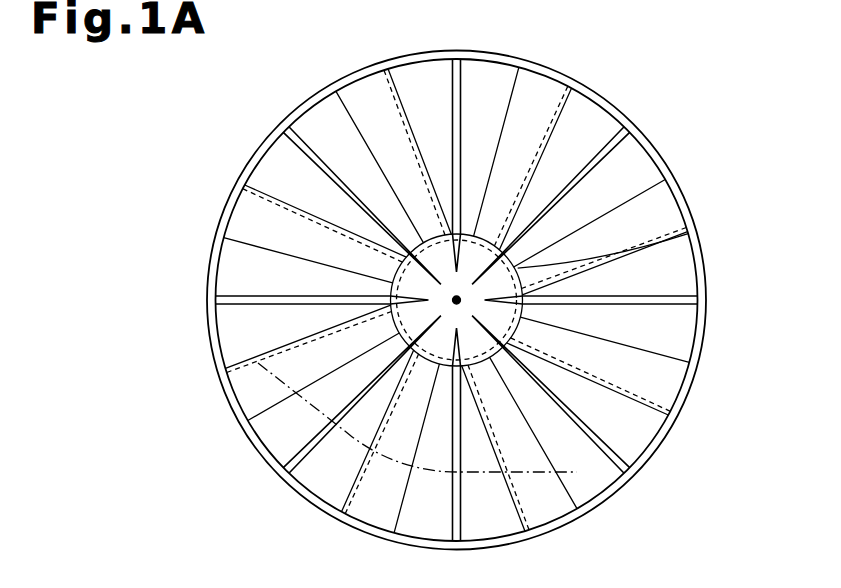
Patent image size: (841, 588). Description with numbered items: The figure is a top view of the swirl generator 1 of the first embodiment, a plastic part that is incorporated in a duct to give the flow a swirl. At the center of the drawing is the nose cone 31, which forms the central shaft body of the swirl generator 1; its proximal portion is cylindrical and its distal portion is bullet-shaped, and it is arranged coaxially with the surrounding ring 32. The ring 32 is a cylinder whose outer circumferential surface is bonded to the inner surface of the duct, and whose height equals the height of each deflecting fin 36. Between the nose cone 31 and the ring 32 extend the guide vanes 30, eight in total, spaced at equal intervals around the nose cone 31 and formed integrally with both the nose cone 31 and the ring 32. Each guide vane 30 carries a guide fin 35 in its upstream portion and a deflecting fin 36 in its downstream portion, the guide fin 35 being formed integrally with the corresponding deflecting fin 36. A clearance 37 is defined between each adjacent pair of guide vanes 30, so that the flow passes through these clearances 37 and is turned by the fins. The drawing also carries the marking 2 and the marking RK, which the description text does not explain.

The swirl generator 1 is at (672, 120).
The section line 2 is at (258, 363).
The guide vanes 30 is at (436, 81).
The nose cone 31 is at (640, 246).
The ring 32 is at (705, 329).
The guide fin 35 is at (291, 128).
The deflecting fin 36 is at (540, 88).
The clearance 37 is at (590, 118).
The rotation angle RK is at (390, 453).